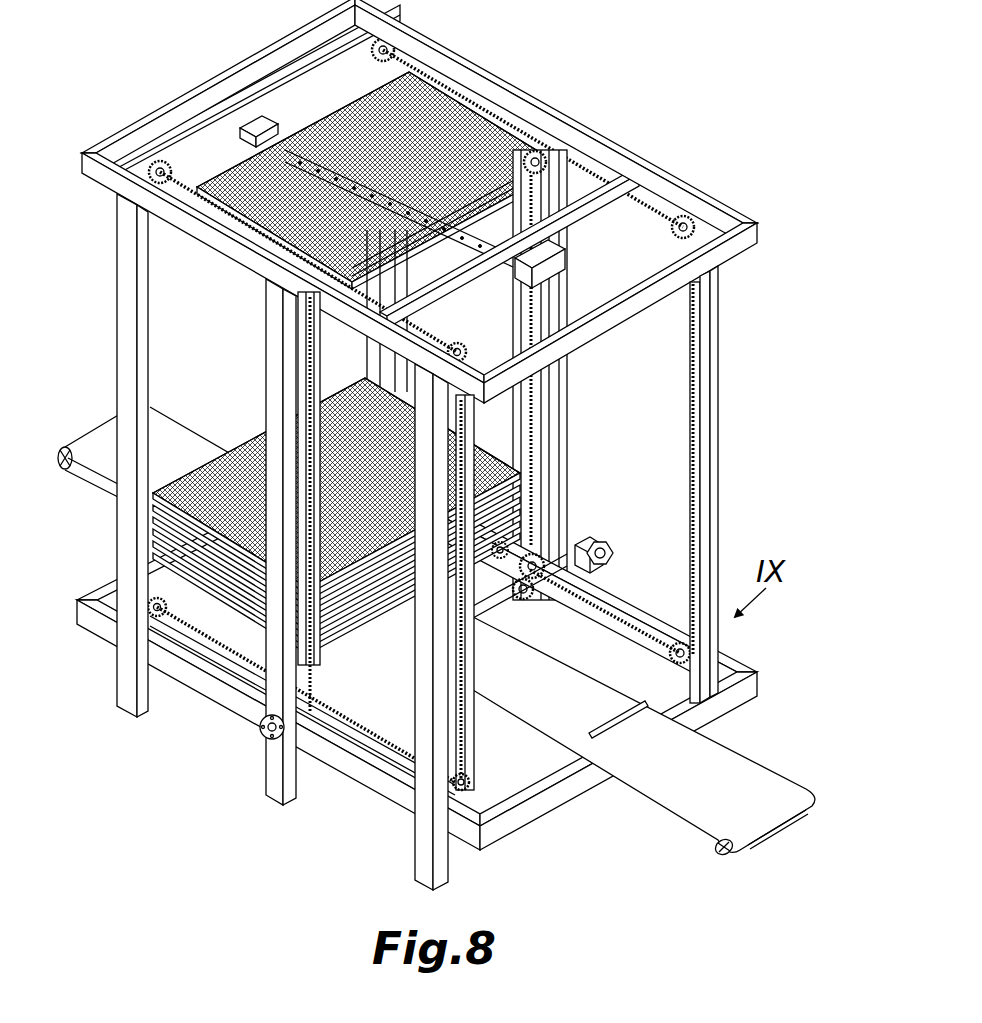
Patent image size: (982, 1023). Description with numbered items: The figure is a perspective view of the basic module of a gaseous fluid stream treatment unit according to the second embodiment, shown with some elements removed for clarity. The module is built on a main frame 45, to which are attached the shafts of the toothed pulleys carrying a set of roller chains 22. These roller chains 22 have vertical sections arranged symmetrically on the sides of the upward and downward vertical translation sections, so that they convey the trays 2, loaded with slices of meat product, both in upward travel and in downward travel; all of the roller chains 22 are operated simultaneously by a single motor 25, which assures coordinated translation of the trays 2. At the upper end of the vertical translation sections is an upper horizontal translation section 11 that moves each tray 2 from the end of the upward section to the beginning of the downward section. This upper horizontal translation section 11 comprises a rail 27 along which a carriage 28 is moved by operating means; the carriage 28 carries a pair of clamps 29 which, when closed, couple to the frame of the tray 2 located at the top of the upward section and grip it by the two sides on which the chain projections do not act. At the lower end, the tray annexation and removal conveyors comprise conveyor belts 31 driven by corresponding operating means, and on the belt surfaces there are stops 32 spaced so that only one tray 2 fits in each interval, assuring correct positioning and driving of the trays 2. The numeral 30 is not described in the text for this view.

The tray 2 is at (247, 430).
The upper horizontal translation section 11 is at (236, 118).
The roller chains 22 is at (713, 524).
The motor 25 is at (604, 548).
The rail 27 is at (567, 224).
The carriage 28 is at (263, 247).
The clamps 29 is at (207, 157).
The belt conveyor 30 is at (762, 747).
The conveyor belts 31 is at (673, 790).
The stops 32 is at (611, 731).
The main frame 45 is at (277, 783).